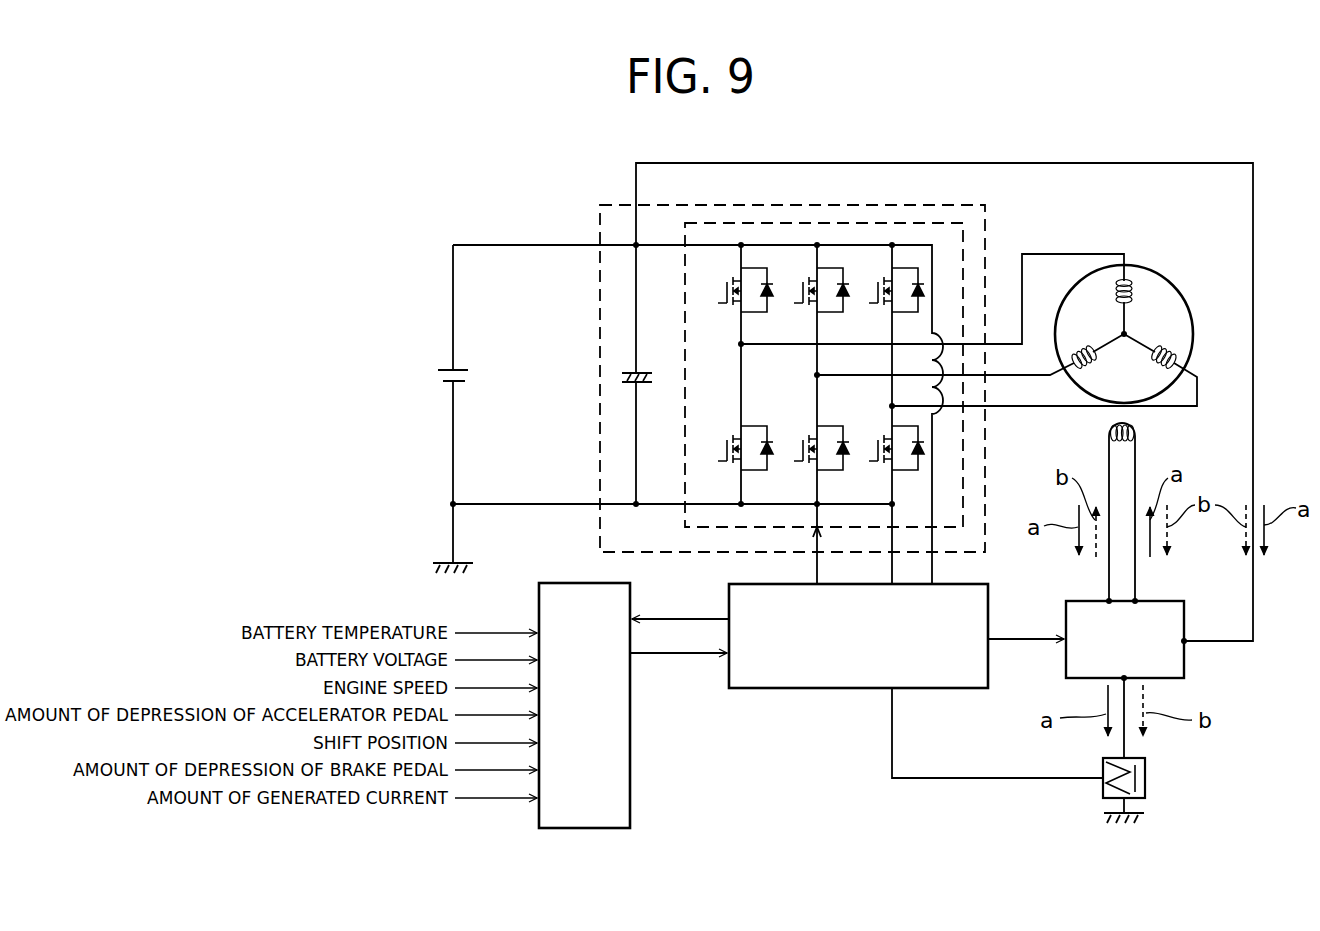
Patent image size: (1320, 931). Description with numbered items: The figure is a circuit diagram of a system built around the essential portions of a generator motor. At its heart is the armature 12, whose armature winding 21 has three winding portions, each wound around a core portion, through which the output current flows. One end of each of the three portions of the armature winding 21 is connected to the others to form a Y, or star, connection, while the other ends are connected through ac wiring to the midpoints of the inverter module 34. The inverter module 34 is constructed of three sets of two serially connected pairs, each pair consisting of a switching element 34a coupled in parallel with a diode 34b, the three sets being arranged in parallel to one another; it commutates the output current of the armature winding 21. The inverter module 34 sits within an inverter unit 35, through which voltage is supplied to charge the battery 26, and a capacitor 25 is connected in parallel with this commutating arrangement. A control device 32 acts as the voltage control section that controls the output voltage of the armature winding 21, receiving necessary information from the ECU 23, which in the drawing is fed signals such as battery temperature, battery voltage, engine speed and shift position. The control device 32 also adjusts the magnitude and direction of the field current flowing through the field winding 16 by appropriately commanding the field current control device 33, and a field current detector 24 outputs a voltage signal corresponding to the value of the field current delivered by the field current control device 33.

The armature 12 is at (1192, 298).
The armature winding 21 is at (1172, 350).
The field winding 16 is at (1137, 431).
The inverter module 34 is at (855, 223).
The inverter unit 35 is at (945, 205).
The switching element 34a is at (723, 306).
The diode 34b is at (772, 308).
The capacitor 25 is at (645, 383).
The battery 26 is at (460, 383).
The ECU (Engine Control Unit) 23 is at (632, 790).
The control device 32 is at (818, 692).
The field current control device 33 is at (1186, 657).
The field current detector 24 is at (1147, 780).